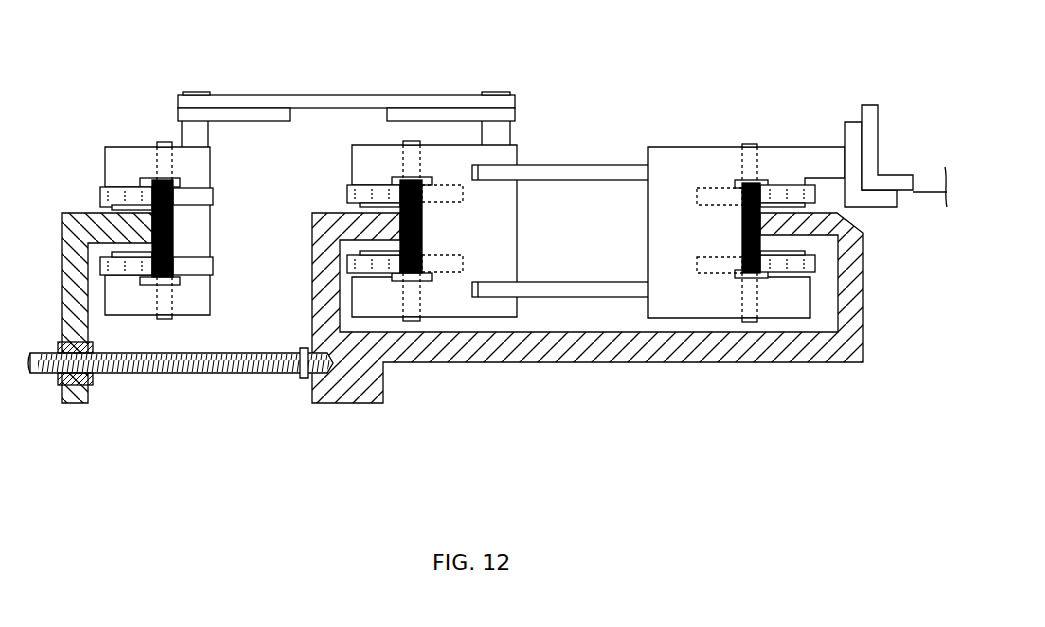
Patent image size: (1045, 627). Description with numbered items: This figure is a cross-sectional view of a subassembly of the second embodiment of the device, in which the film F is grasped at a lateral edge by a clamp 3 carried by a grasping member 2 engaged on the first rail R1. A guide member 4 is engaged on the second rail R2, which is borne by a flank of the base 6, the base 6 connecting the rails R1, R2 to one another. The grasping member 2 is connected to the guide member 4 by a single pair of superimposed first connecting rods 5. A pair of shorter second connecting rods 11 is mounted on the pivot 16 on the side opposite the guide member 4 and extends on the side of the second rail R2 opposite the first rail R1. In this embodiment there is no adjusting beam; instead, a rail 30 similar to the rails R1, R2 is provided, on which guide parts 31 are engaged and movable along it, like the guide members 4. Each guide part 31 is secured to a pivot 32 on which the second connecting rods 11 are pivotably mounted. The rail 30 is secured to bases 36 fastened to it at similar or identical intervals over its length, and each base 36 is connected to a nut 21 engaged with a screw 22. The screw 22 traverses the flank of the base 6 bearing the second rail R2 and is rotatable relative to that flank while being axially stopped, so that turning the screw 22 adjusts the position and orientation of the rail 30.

The grasping member 2 is at (708, 147).
The clamp 3 is at (882, 162).
The guide member 4 is at (437, 145).
The first connecting rods 5 is at (597, 280).
The base 6 is at (522, 362).
The second connecting rods 11 is at (275, 108).
The pivot 16 is at (513, 130).
The nut 21 is at (93, 378).
The screw 22 is at (170, 373).
The rail 30 is at (147, 208).
The guide part 31 is at (150, 145).
The pivot 32 is at (208, 133).
The base 36 is at (73, 213).
The first guide rail R1 is at (763, 243).
The second guide rail R2 is at (398, 208).
The film F is at (928, 190).